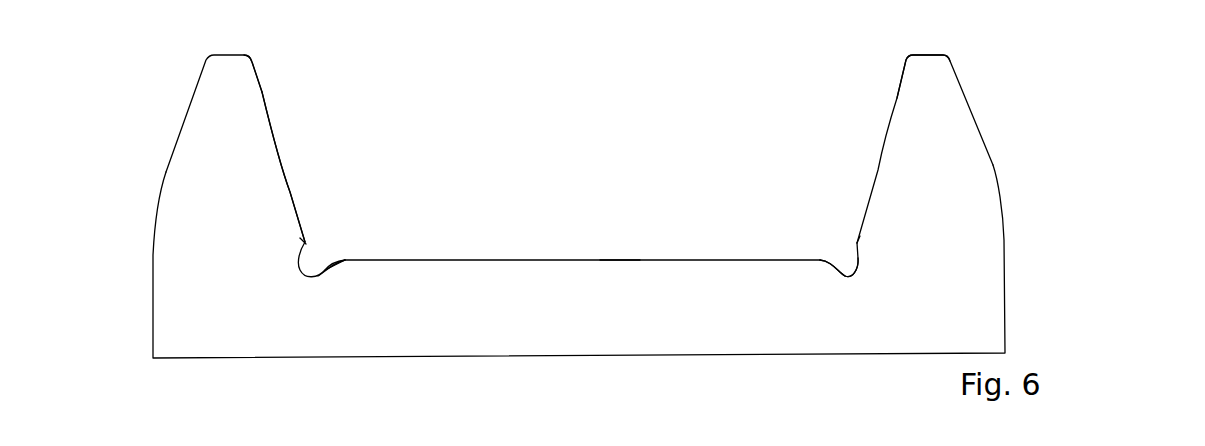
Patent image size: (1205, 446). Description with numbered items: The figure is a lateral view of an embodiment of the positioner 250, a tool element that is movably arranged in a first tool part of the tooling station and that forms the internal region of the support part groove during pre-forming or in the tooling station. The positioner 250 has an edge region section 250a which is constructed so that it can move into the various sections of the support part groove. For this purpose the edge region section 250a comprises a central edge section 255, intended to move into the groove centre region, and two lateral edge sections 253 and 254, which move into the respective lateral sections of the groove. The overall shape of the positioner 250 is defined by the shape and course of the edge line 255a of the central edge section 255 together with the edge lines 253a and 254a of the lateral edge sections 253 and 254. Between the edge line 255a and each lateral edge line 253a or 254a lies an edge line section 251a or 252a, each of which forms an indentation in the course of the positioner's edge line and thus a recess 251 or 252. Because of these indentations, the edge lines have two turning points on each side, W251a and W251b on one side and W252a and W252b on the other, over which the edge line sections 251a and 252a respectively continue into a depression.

The positioner 250 is at (1045, 169).
The edge region section 250a is at (285, 146).
The recess 251 is at (834, 246).
The edge line section 251a is at (846, 258).
The recess 252 is at (319, 246).
The edge line section 252a is at (323, 265).
The lateral edge section 253 is at (885, 137).
The edge line 253a is at (896, 96).
The lateral edge section 254 is at (293, 190).
The edge line 254a is at (264, 91).
The central edge section 255 is at (518, 261).
The edge line 255a is at (619, 258).
The turning point W251a is at (857, 240).
The turning point W251b is at (826, 262).
The turning point W252a is at (305, 241).
The turning point W252b is at (334, 263).